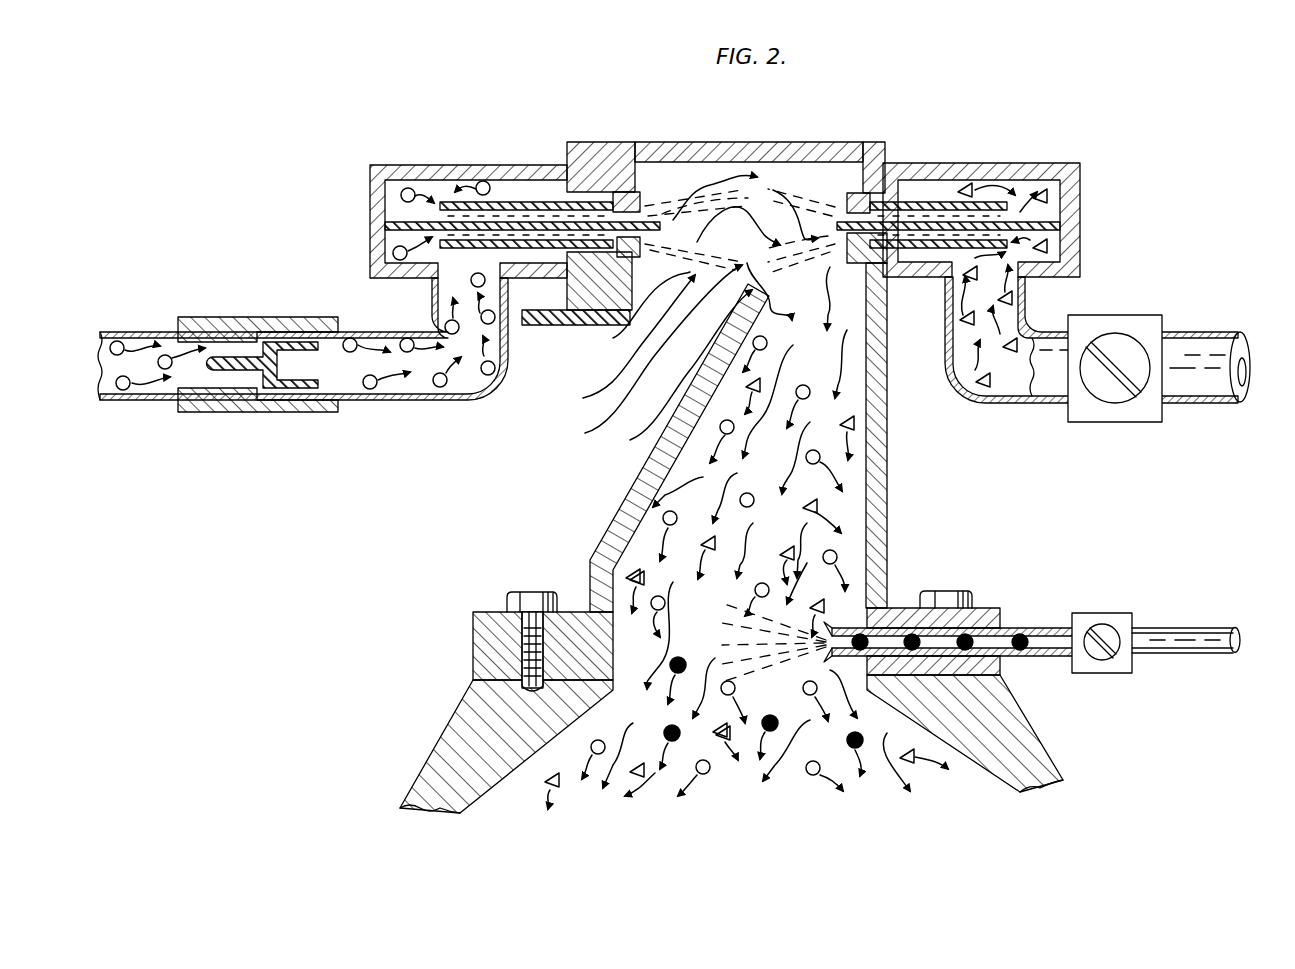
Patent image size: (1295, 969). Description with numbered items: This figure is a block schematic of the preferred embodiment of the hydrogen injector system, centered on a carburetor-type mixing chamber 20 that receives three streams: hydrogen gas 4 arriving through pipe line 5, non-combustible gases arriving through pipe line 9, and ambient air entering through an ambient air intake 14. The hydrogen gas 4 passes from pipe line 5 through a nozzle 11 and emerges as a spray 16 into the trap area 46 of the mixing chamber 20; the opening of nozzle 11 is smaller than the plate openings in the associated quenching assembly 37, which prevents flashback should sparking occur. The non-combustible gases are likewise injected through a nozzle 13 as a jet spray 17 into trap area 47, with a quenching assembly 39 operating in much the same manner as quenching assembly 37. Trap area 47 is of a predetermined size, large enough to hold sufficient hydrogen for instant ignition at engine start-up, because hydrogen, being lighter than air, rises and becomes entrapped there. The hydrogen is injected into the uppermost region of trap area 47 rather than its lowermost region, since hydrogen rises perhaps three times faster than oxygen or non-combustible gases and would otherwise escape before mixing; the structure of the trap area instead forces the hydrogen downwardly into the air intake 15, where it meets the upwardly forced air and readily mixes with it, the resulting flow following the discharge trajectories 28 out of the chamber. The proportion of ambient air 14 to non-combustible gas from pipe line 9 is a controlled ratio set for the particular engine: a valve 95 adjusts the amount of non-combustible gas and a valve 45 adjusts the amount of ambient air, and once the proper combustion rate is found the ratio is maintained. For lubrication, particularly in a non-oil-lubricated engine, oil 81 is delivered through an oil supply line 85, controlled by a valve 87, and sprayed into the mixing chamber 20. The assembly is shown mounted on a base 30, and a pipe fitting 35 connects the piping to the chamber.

The hydrogen gas 4 is at (440, 386).
The pipe line 5 is at (139, 338).
The pipe line 9 is at (1192, 348).
The nozzle 11 is at (637, 190).
The nozzle 13 is at (855, 196).
The ambient air intake 14 is at (618, 382).
The air intake 15 is at (805, 384).
The spray 16 is at (662, 176).
The jet spray 17 is at (690, 332).
The mixing chamber 20 is at (886, 513).
The discharge trajectories 28 is at (683, 172).
The base 30 is at (870, 722).
The pipe fitting 35 is at (212, 404).
The quenching assembly 37 is at (443, 200).
The quenching assembly 39 is at (1070, 175).
The valve 45 is at (573, 327).
The trap area 46 is at (816, 182).
The trap area 47 is at (720, 172).
The oil 81 is at (834, 627).
The oil supply line 85 is at (1188, 640).
The valve 87 is at (1099, 620).
The valve 95 is at (1094, 324).